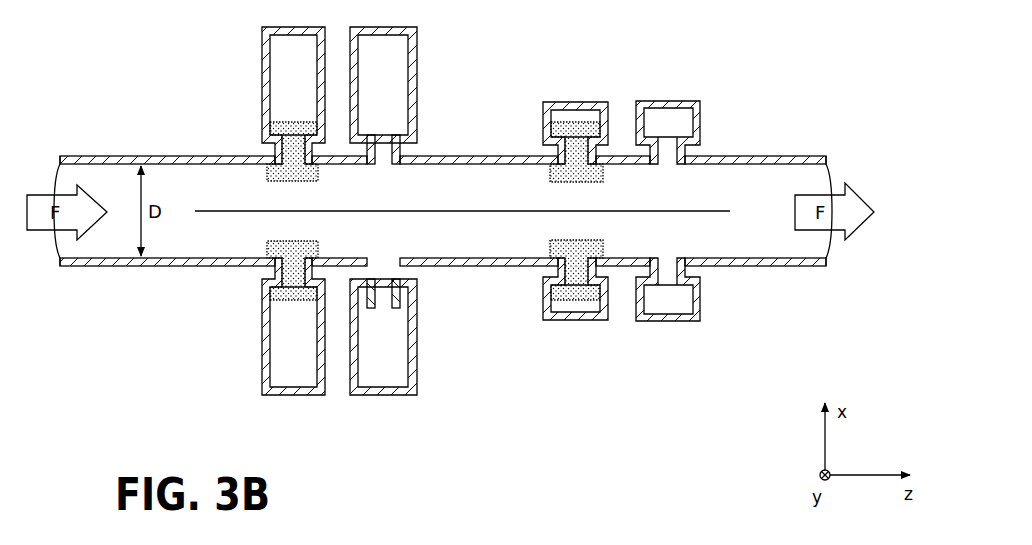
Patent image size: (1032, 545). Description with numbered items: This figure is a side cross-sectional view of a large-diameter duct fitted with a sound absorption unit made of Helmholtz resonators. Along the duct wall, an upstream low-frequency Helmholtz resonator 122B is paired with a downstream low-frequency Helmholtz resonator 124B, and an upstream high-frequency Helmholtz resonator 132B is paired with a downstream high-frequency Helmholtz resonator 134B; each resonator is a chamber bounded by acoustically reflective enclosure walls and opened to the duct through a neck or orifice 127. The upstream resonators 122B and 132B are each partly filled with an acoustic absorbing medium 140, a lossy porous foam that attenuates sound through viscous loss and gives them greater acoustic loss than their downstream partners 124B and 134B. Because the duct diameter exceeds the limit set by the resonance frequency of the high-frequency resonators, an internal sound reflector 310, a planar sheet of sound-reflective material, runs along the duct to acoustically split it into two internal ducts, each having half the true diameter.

The upstream low-frequency Helmholtz resonator 122B is at (258, 78).
The downstream low-frequency Helmholtz resonator 124B is at (419, 55).
The orifice 127 is at (405, 150).
The upstream high-frequency Helmholtz resonator 132B is at (580, 98).
The downstream high-frequency Helmholtz resonator 134B is at (677, 98).
The acoustic absorbing medium 140 is at (292, 125).
The internal sound reflector 310 is at (412, 207).